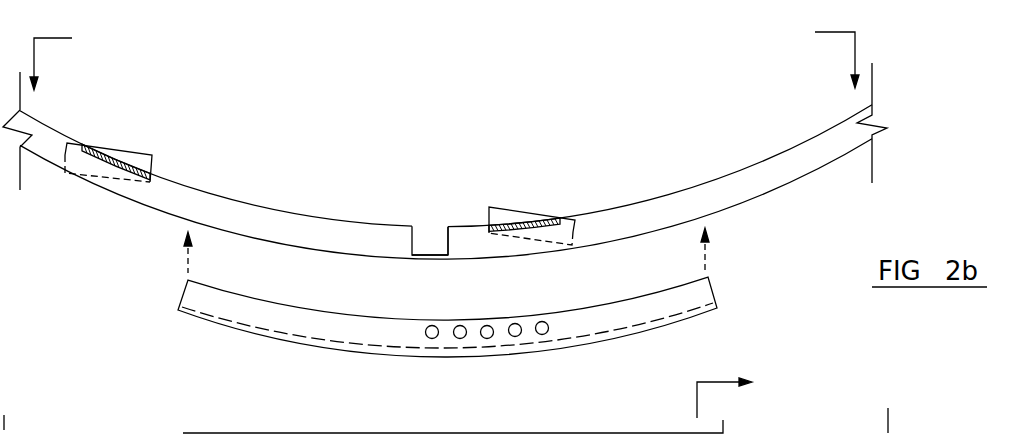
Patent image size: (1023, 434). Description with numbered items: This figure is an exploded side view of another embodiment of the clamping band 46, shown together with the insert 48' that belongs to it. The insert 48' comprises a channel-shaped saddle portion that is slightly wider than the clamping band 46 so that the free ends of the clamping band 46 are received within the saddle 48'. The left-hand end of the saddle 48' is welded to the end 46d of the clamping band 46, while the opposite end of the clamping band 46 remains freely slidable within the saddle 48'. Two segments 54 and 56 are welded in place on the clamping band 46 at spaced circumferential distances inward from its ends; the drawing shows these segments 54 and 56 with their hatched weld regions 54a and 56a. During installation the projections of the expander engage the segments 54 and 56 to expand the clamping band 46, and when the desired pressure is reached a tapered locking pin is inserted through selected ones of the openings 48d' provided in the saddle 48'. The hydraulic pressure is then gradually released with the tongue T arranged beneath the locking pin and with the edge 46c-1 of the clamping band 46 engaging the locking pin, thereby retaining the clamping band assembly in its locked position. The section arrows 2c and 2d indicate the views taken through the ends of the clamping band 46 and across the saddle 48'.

The clamping band 46 is at (755, 163).
The end of the clamping band 46d is at (418, 222).
The edge of the clamping band 46c-1 is at (443, 233).
The tongue T is at (427, 261).
The segment 54 is at (118, 148).
The weld / hatched bond region of tab 54 54a is at (157, 163).
The segment 56 is at (528, 212).
The weld / hatched bond region of tab 56 56a is at (488, 220).
The insert 48' is at (447, 355).
The holes in second strip 48d' is at (448, 358).
The section line 2c is at (444, 55).
The section line 2d is at (724, 384).